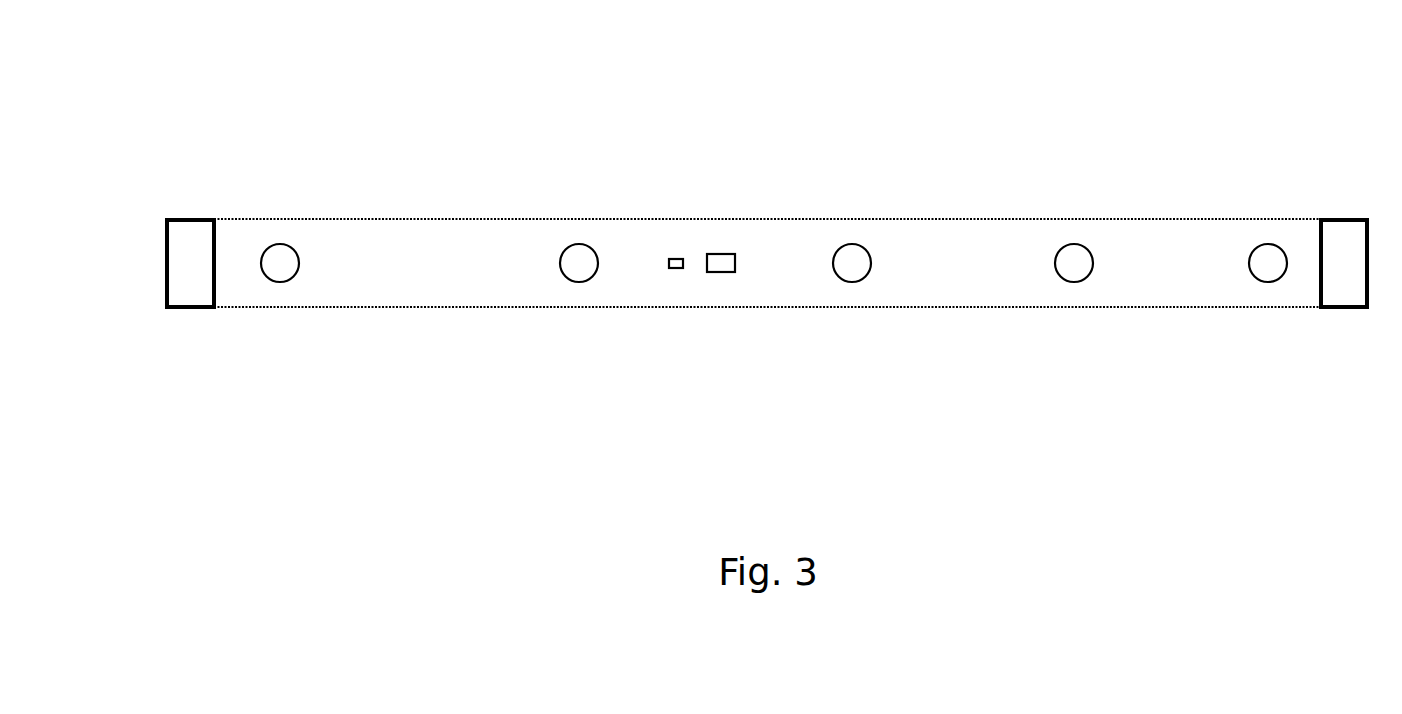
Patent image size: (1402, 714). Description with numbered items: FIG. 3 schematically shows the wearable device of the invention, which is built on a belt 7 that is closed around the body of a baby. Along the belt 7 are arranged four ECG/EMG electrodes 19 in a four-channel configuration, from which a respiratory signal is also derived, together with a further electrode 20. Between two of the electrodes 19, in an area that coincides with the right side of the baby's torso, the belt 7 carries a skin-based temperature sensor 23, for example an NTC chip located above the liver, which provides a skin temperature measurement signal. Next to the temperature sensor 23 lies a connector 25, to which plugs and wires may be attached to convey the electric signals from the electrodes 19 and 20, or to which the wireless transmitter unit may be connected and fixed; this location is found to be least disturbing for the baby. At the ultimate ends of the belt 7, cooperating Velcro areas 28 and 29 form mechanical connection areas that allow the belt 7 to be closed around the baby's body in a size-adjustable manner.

The belt 7 is at (1186, 219).
The ECG/EMG electrodes 19 is at (280, 263).
The electrode 20 is at (1074, 263).
The skin-based temperature sensor 23 is at (677, 258).
The connector 25 is at (721, 272).
The Velcro area 28 is at (1343, 219).
The Velcro area 29 is at (190, 219).